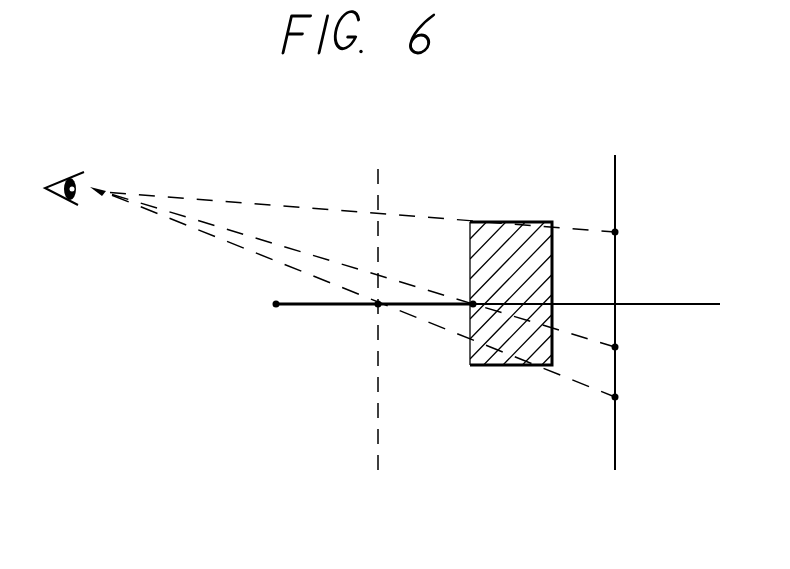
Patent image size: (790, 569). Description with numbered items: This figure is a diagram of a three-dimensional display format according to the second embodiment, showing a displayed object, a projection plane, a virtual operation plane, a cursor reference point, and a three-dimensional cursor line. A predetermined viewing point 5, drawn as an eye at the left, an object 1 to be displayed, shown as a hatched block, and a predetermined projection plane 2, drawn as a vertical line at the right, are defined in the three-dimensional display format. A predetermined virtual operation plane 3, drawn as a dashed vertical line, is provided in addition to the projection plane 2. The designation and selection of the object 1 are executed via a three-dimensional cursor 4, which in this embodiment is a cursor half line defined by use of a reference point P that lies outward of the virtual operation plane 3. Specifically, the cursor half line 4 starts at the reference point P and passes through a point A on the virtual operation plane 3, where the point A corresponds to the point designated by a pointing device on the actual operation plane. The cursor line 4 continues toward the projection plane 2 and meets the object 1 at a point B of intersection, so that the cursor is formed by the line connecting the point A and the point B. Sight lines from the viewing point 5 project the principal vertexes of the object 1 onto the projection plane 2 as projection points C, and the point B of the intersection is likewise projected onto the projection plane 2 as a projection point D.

The object 1 is at (536, 221).
The projection plane 2 is at (615, 170).
The virtual operation plane 3 is at (379, 167).
The three-dimensional cursor 4 is at (442, 306).
The viewing point 5 is at (66, 178).
The reference point P is at (277, 306).
The point on the virtual operation plane A is at (377, 305).
The point of intersection B is at (472, 303).
The projection point C is at (618, 232).
The projection point D is at (618, 347).